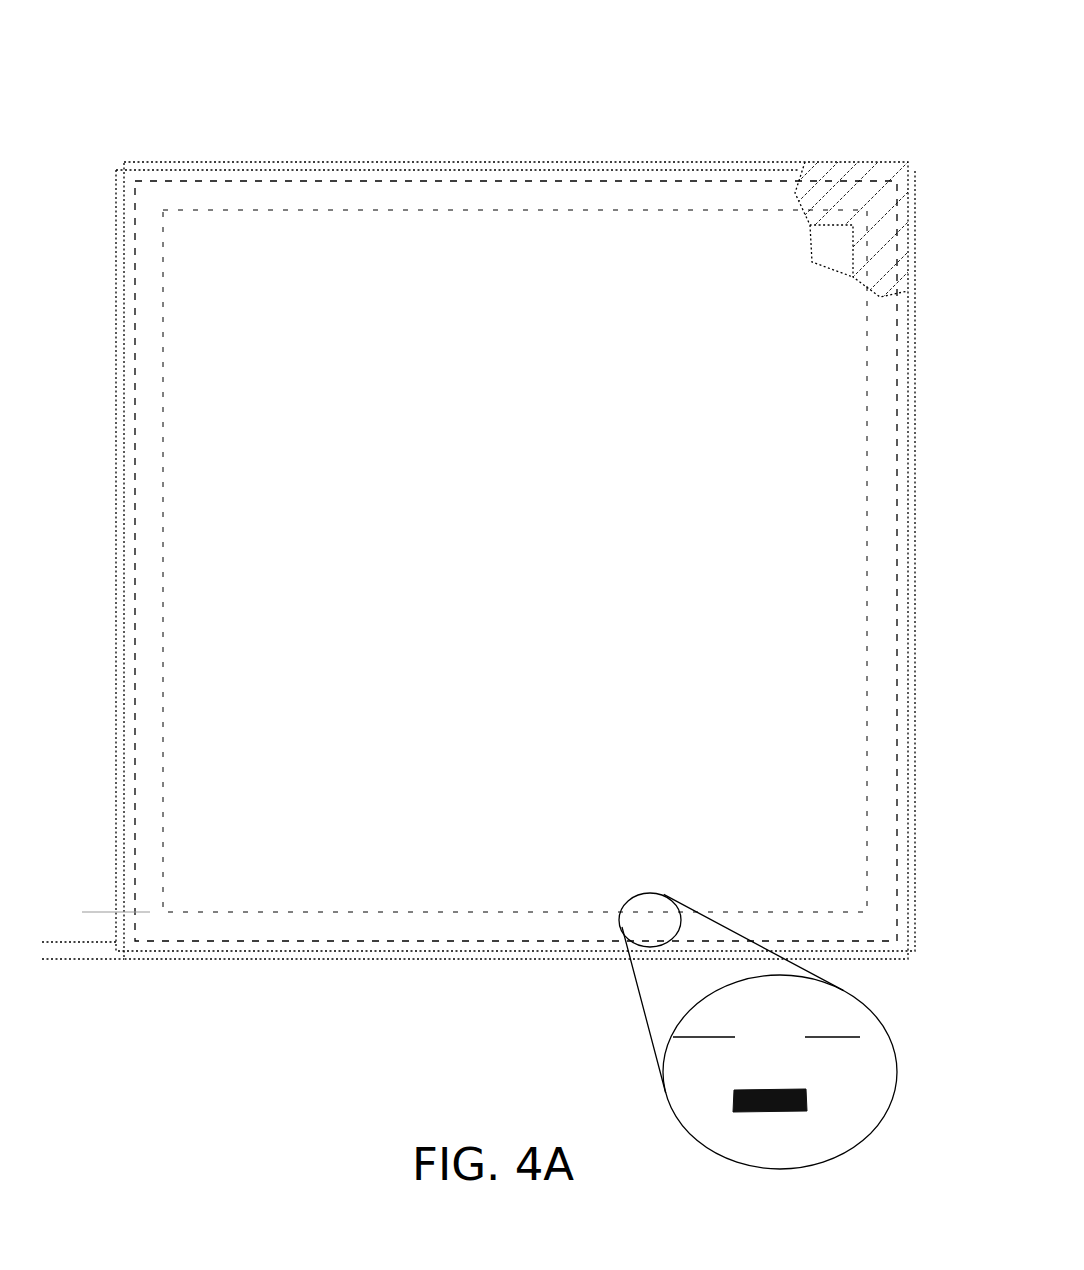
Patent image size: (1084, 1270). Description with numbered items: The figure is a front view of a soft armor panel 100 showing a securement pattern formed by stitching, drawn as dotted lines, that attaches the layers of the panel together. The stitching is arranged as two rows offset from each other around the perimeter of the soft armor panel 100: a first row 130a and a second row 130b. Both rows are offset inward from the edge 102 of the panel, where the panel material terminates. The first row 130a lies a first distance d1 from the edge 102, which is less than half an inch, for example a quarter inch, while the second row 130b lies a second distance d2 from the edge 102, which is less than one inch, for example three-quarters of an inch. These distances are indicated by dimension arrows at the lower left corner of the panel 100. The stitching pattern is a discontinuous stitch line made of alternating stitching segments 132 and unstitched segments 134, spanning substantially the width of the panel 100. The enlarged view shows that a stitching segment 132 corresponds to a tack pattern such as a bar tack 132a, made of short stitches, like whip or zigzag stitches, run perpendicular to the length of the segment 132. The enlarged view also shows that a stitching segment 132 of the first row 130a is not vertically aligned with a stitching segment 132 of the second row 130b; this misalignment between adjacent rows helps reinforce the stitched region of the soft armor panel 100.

The soft armor panel 100 is at (510, 64).
The edge 102 is at (285, 957).
The first row 130a is at (232, 183).
The second row 130b is at (455, 210).
The stitching segment 132 is at (687, 1033).
The unstitched segment 134 is at (780, 1029).
The bar tack 132a is at (755, 1110).
The first distance d1 is at (67, 915).
The second distance d2 is at (105, 885).